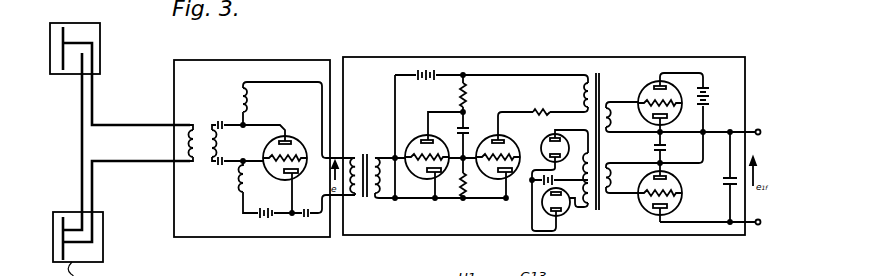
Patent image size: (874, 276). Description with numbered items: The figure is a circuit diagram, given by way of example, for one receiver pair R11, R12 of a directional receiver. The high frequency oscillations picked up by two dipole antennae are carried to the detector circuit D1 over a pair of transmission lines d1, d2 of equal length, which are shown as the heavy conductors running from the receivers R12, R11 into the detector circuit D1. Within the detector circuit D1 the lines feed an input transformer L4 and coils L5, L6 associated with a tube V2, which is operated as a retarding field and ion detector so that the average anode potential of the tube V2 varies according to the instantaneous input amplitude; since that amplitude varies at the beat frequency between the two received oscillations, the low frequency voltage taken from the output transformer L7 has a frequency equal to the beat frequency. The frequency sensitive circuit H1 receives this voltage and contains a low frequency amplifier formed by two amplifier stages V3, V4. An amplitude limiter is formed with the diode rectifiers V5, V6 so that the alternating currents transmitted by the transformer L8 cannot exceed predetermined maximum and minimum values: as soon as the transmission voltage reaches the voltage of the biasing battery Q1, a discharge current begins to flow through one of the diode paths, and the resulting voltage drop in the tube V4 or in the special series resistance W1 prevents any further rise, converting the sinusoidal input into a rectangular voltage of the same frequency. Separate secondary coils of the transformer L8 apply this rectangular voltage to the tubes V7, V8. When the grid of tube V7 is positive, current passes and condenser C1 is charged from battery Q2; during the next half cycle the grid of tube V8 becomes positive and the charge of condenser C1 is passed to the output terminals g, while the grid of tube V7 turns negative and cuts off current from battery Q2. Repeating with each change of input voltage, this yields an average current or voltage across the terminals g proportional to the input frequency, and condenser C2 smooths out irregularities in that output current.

The receiver R12 is at (71, 23).
The receiver R11 is at (103, 228).
The transmission line d1 is at (82, 192).
The transmission line d2 is at (82, 98).
The detector circuit D1 is at (232, 237).
The input transformer L4 is at (205, 162).
The coil L5 is at (241, 95).
The coil L6 is at (240, 195).
The tube V2 is at (290, 137).
The frequency sensitive circuit H1 is at (420, 235).
The output transformer L7 is at (360, 197).
The amplifier stage V3 is at (410, 142).
The amplifier stage V4 is at (485, 140).
The series resistance W1 is at (541, 111).
The transformer L8 is at (600, 210).
The diode rectifier V5 is at (544, 139).
The diode rectifier V6 is at (569, 211).
The biasing battery Q1 is at (541, 184).
The tube V7 is at (650, 84).
The tube V8 is at (683, 198).
The battery Q2 is at (694, 102).
The condenser C1 is at (667, 148).
The condenser C2 is at (722, 180).
The output terminals g is at (757, 176).